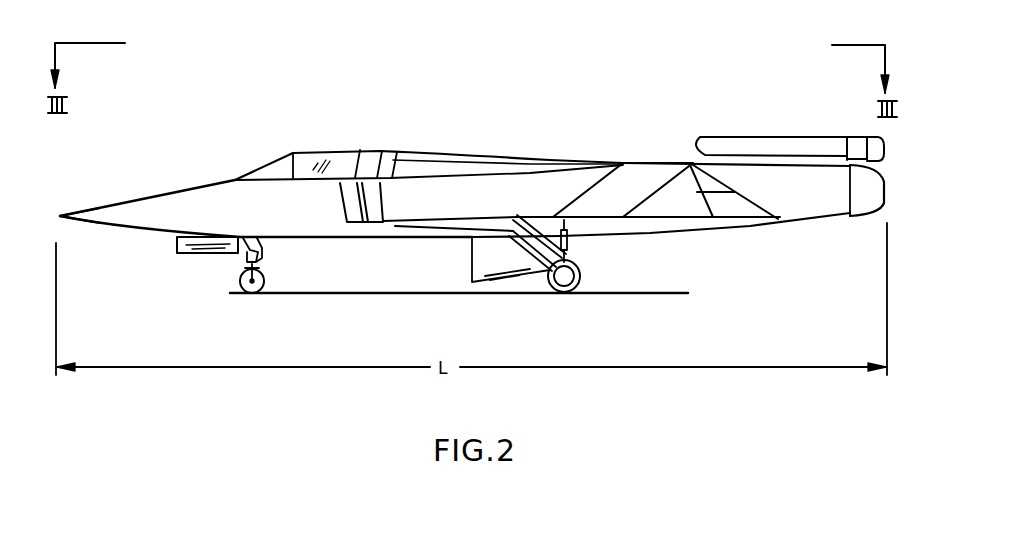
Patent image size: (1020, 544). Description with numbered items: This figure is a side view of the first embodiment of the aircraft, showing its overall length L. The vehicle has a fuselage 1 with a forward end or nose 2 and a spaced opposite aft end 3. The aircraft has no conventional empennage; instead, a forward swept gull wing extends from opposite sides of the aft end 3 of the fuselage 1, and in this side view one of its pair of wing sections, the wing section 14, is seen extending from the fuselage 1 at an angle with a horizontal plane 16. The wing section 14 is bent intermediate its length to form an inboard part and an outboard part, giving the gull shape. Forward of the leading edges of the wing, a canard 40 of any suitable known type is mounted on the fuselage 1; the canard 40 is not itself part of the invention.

The fuselage 1 is at (307, 222).
The nose 2 is at (86, 213).
The aft end 3 is at (871, 201).
The wing section 14 is at (677, 208).
The horizontal plane 16 is at (235, 293).
The canard 40 is at (414, 226).